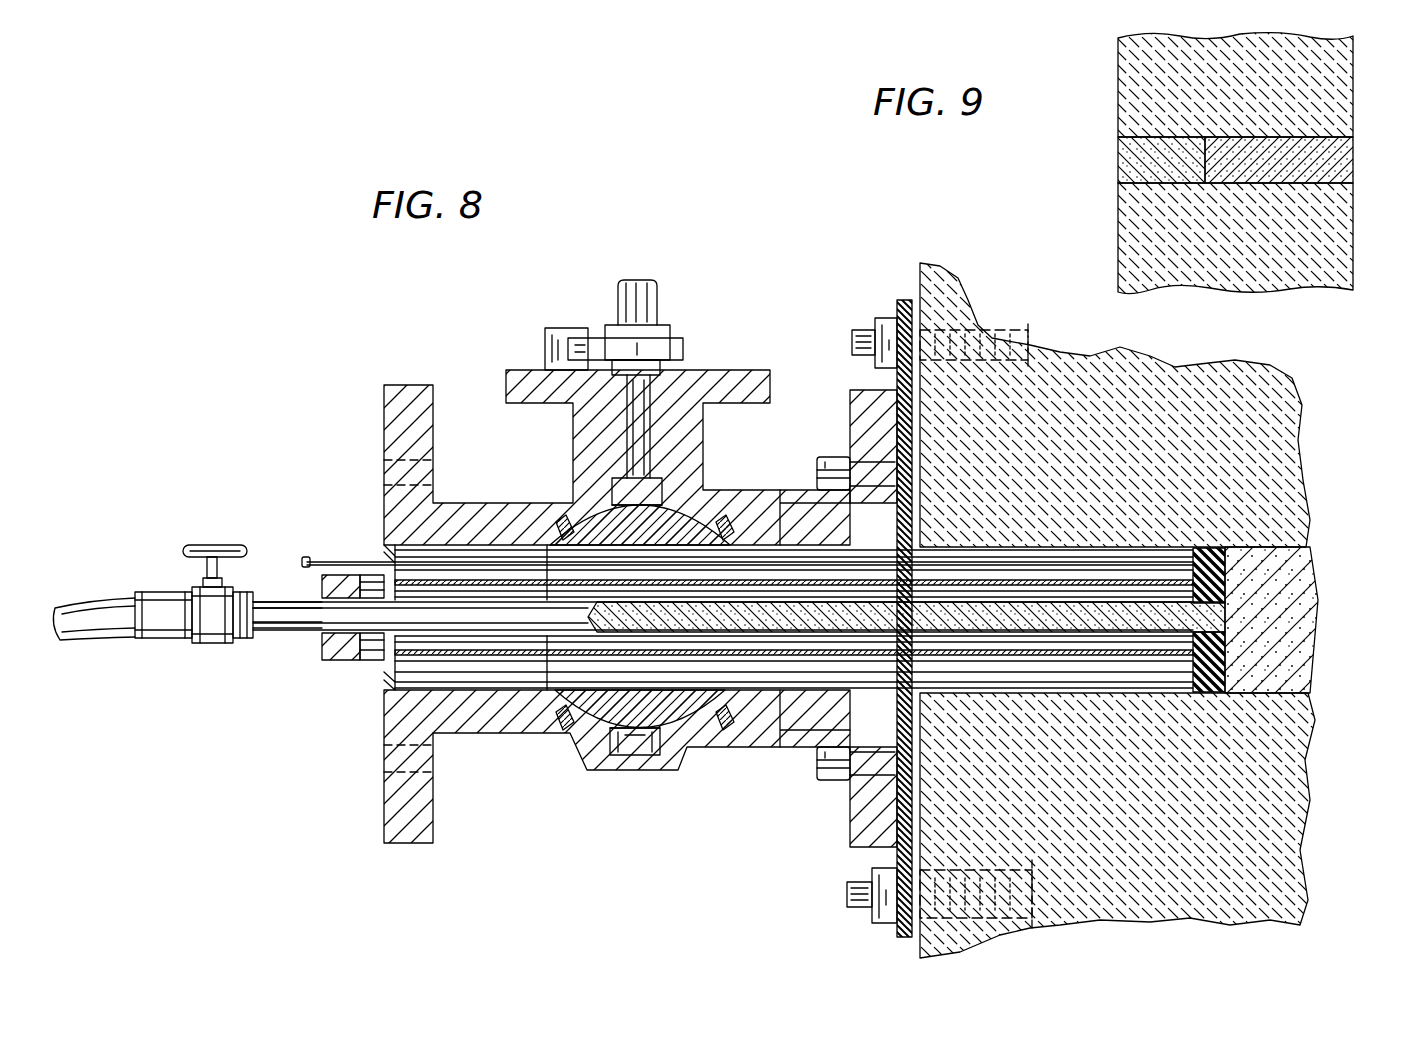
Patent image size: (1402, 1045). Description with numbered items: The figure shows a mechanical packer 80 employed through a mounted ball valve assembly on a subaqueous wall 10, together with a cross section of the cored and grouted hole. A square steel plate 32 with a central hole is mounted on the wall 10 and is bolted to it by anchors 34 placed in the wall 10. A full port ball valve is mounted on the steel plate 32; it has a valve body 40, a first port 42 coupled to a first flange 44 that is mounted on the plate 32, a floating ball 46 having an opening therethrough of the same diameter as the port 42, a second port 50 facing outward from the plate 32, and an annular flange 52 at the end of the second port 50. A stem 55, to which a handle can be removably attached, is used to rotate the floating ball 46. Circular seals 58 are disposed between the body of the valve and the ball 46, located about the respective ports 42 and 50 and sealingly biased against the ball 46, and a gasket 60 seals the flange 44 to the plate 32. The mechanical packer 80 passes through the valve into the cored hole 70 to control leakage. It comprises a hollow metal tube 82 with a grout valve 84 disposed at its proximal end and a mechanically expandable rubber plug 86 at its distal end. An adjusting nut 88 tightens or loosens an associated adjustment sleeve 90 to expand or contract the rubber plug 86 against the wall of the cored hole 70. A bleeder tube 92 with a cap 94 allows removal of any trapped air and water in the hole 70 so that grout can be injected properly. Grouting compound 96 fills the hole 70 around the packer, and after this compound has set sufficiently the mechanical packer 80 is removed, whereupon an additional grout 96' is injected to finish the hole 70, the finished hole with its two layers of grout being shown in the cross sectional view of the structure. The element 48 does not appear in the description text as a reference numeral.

In FIG. 8, the wall 10 is at (1246, 380).
In FIG. 9, the wall 10 is at (1315, 268).
In FIG. 8, the steel plate 32 is at (880, 858).
In FIG. 8, the anchors 34 is at (1058, 926).
In FIG. 8, the valve body 40 is at (602, 765).
In FIG. 8, the first port 42 is at (740, 735).
In FIG. 8, the first flange 44 is at (848, 838).
In FIG. 8, the floating ball 46 is at (580, 538).
In FIG. 8, the lower spherical seat 48 is at (560, 685).
In FIG. 8, the second port 50 is at (470, 735).
In FIG. 8, the annular flange 52 is at (433, 836).
In FIG. 8, the stem 55 is at (655, 307).
In FIG. 8, the circular seals 58 is at (560, 518).
In FIG. 8, the gasket 60 is at (897, 392).
In FIG. 8, the hole 70 is at (1003, 678).
In FIG. 8, the mechanical packer 80 is at (360, 699).
In FIG. 8, the hollow metal tube 82 is at (445, 612).
In FIG. 8, the grout valve 84 is at (215, 640).
In FIG. 8, the rubber plug 86 is at (1200, 672).
In FIG. 8, the adjusting nut 88 is at (325, 660).
In FIG. 8, the adjustment sleeve 90 is at (806, 655).
In FIG. 8, the bleeder tube 92 is at (503, 555).
In FIG. 8, the cap 94 is at (307, 557).
In FIG. 8, the grouting compound 96 is at (1293, 620).
In FIG. 9, the grouting compound 96 is at (1300, 173).
In FIG. 9, the additional grout 96' is at (1136, 159).